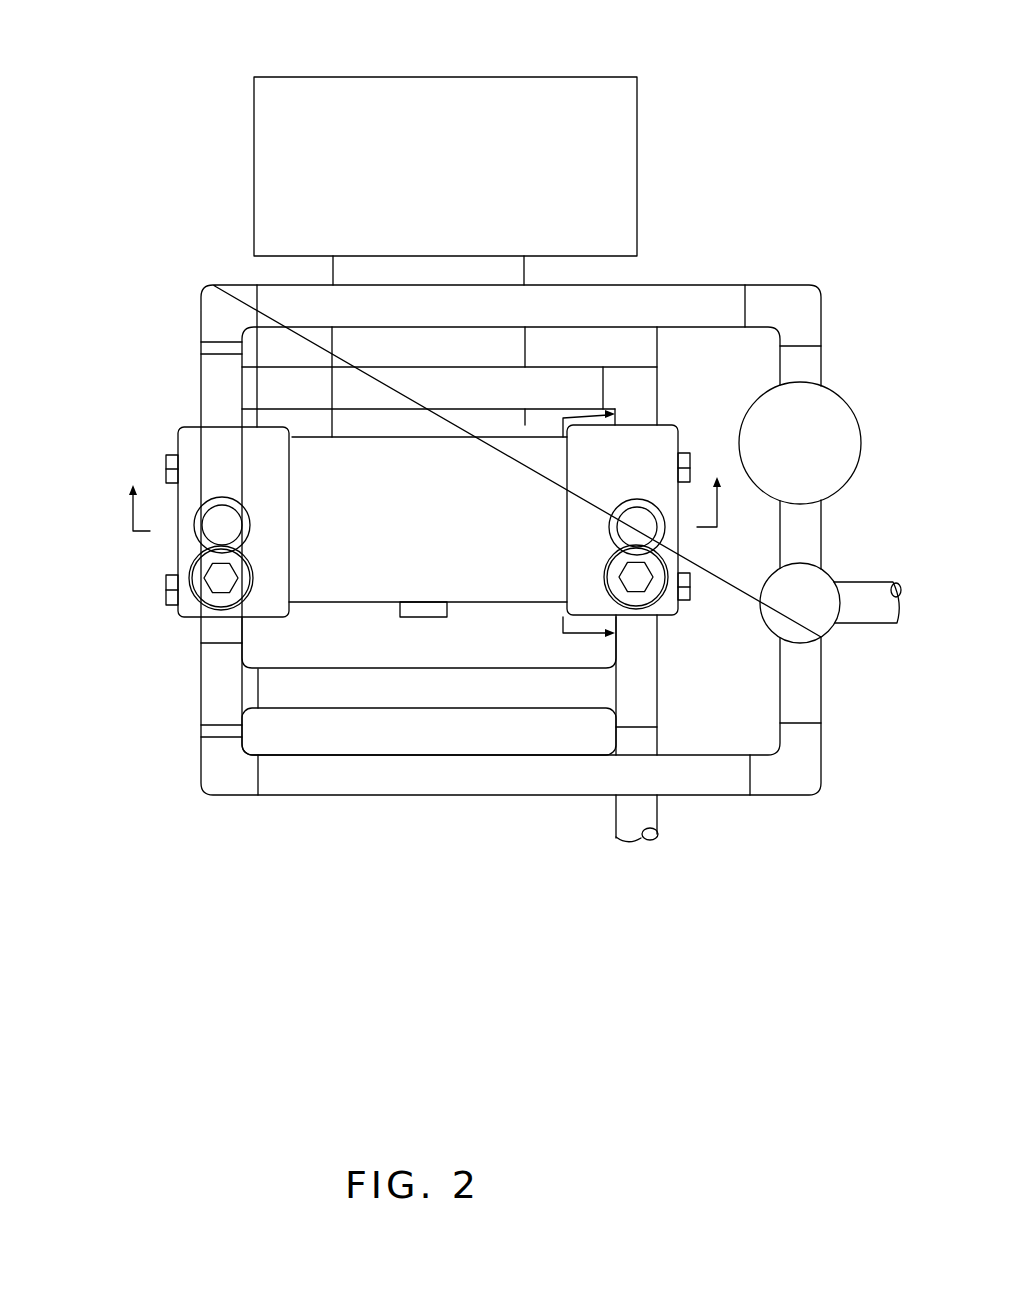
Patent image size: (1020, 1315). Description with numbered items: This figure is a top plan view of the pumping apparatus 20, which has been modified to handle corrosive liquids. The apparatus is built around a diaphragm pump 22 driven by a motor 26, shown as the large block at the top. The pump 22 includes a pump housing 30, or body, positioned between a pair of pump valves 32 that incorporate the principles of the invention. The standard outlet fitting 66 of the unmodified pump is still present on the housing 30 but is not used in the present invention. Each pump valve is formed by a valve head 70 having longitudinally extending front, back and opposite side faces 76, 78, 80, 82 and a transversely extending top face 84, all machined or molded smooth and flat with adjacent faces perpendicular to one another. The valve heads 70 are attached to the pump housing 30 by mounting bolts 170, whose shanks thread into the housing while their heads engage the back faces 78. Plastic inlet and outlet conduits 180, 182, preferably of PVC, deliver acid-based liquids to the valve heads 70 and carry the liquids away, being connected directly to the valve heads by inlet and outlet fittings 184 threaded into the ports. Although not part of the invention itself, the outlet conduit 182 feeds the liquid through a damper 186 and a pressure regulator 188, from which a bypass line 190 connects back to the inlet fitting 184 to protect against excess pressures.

The pumping apparatus 20 is at (185, 205).
The diaphragm pump 22 is at (163, 410).
The motor 26 is at (575, 76).
The pump housing 30 is at (488, 603).
The pump valve 32 is at (176, 622).
The outlet fitting 66 is at (422, 600).
The valve head 70 is at (289, 427).
The front face 76 is at (292, 531).
The back face 78 is at (178, 508).
The side face 80 is at (628, 680).
The side face 82 is at (220, 427).
The top face 84 is at (273, 492).
The mounting bolt 170 is at (168, 598).
The inlet conduit 180 is at (500, 708).
The outlet conduit 182 is at (632, 420).
The inlet and outlet fitting 184 is at (202, 689).
The damper 186 is at (828, 392).
The pressure regulator 188 is at (836, 640).
The bypass line 190 is at (358, 797).